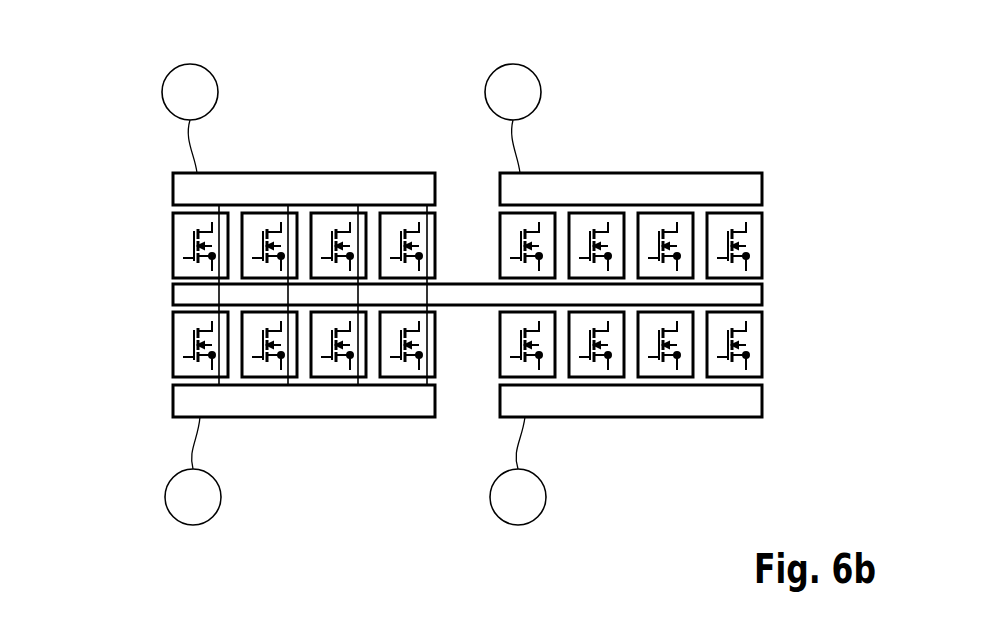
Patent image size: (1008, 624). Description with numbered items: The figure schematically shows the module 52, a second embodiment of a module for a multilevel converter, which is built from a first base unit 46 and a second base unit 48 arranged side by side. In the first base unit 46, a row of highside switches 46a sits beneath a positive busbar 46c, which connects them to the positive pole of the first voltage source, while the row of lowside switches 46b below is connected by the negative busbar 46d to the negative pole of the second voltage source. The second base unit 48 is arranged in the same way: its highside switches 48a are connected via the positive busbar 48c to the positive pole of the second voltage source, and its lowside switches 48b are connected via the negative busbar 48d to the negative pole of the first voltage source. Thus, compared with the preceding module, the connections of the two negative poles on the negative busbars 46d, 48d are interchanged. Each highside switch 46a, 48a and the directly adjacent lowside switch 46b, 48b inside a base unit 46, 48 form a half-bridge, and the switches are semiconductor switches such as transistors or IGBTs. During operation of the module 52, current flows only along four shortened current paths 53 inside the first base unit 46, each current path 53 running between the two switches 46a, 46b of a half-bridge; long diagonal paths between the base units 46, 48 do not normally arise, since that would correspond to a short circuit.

The first base unit 46 is at (294, 102).
The highside switches 46a is at (173, 248).
The lowside switches 46b is at (173, 348).
The positive busbar 46c is at (373, 182).
The negative busbar 46d is at (373, 405).
The second base unit 48 is at (612, 102).
The highside switches 48a is at (548, 212).
The lowside switches 48b is at (542, 378).
The positive busbar 48c is at (699, 182).
The negative busbar 48d is at (700, 405).
The module 52 is at (120, 178).
The current paths 53 is at (218, 291).